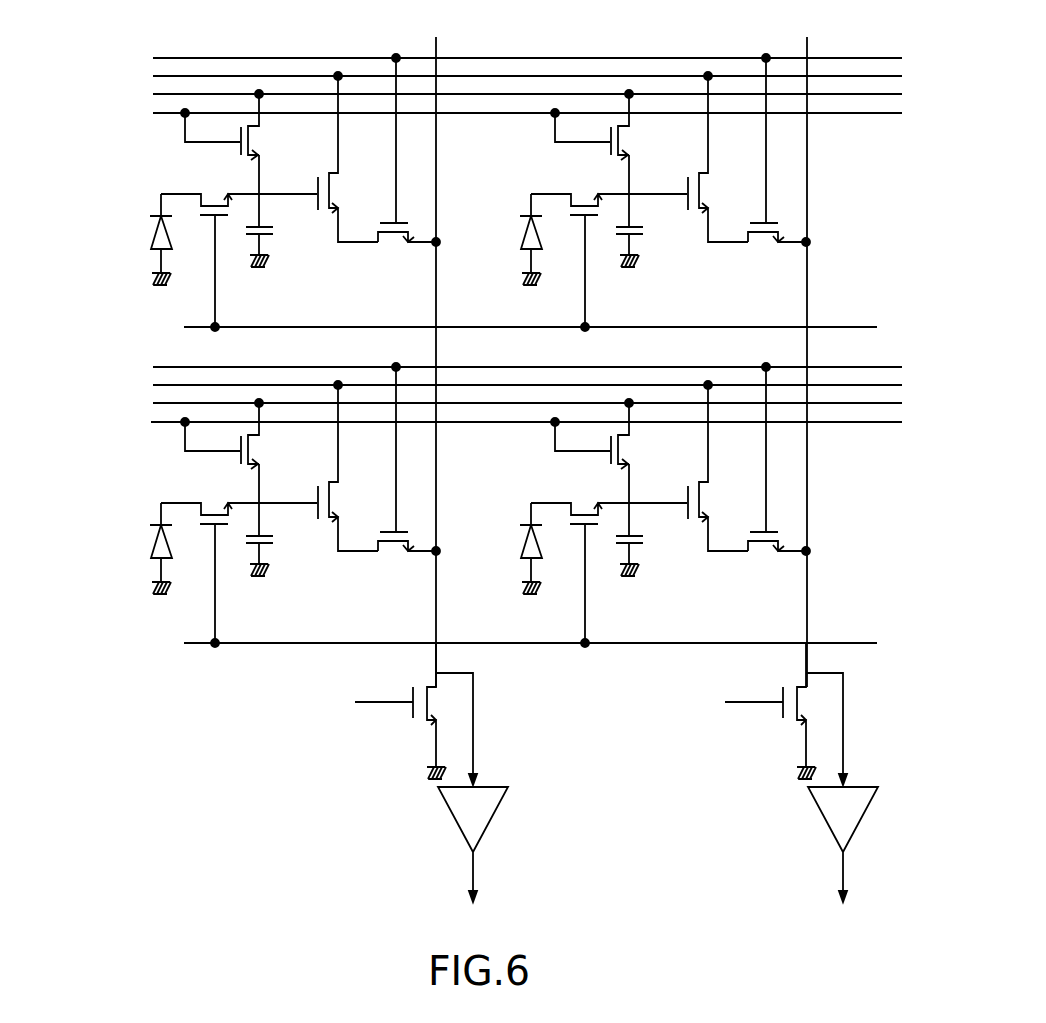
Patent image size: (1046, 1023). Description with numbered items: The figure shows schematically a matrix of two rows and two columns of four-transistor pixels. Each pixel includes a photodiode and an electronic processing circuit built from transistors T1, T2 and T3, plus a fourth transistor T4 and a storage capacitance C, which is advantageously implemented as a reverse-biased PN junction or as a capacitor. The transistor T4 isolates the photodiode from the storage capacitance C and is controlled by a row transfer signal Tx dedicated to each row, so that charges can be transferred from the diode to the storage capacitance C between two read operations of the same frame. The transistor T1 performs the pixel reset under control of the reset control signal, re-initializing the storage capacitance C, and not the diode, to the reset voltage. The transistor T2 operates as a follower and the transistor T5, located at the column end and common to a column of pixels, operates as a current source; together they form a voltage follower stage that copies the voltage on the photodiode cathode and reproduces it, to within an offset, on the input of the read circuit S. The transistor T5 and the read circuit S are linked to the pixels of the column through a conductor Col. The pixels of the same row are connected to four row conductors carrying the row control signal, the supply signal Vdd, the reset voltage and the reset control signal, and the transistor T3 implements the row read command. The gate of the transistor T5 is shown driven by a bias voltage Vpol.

The transistor T1 is at (435, 279).
The transistor T2 is at (540, 311).
The transistor T3 is at (584, 317).
The transistor T4 is at (418, 401).
The transistor T5 is at (626, 711).
The storage capacitance C is at (466, 365).
The row transfer signal Tx is at (505, 481).
The conductor Col is at (613, 345).
The read circuit S is at (660, 787).
The bias voltage Vpol is at (569, 688).
The signal Vdd is at (501, 229).